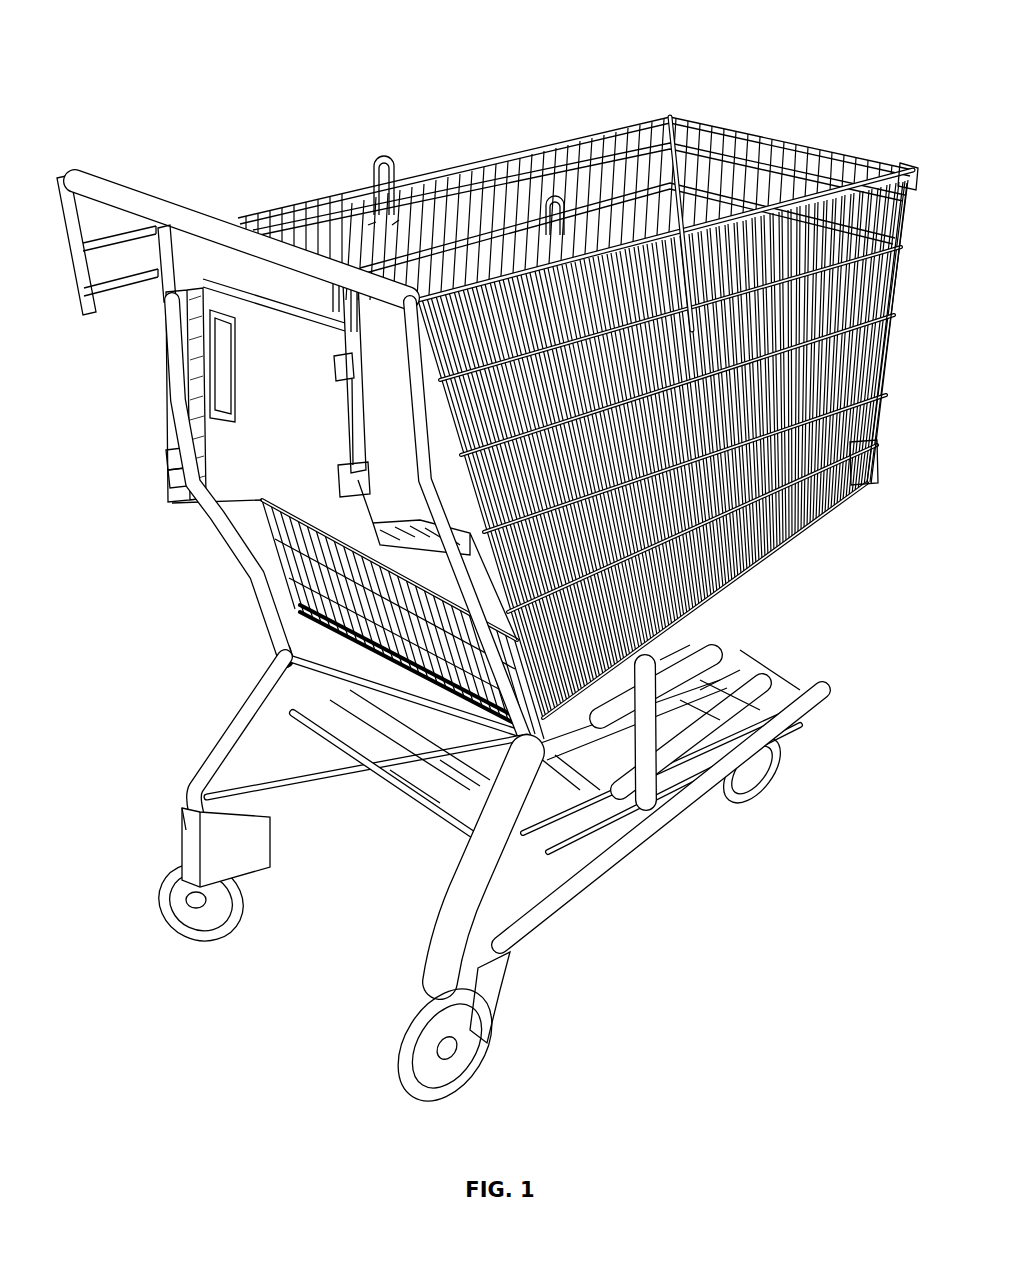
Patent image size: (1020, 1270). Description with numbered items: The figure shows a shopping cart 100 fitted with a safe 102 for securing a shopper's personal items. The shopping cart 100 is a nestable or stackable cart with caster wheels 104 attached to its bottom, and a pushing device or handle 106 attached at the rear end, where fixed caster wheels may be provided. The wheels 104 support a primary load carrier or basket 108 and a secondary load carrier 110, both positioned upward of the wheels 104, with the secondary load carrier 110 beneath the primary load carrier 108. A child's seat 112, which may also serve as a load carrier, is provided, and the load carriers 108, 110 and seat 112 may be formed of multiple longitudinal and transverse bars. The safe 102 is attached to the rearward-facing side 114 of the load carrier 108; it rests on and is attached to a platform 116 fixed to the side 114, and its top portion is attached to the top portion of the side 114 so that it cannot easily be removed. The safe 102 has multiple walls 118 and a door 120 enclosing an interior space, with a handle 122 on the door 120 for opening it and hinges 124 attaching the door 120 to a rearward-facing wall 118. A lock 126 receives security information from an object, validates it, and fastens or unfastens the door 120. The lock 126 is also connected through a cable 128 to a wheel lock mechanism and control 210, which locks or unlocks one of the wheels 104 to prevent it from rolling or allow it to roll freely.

The shopping cart 100 is at (190, 86).
The safe 102 is at (195, 490).
The wheels 104 is at (215, 925).
The handle 106 is at (95, 172).
The primary load carrier 108 is at (790, 138).
The secondary load carrier 110 is at (700, 645).
The child's seat 112 is at (400, 150).
The rearward-facing side 114 is at (232, 576).
The platform 116 is at (168, 456).
The walls 118 is at (165, 300).
The door 120 is at (180, 474).
The handle 122 is at (205, 417).
The hinges 124 is at (340, 485).
The lock 126 is at (168, 345).
The cable 128 is at (215, 715).
The wheel lock mechanism and control 210 is at (160, 830).